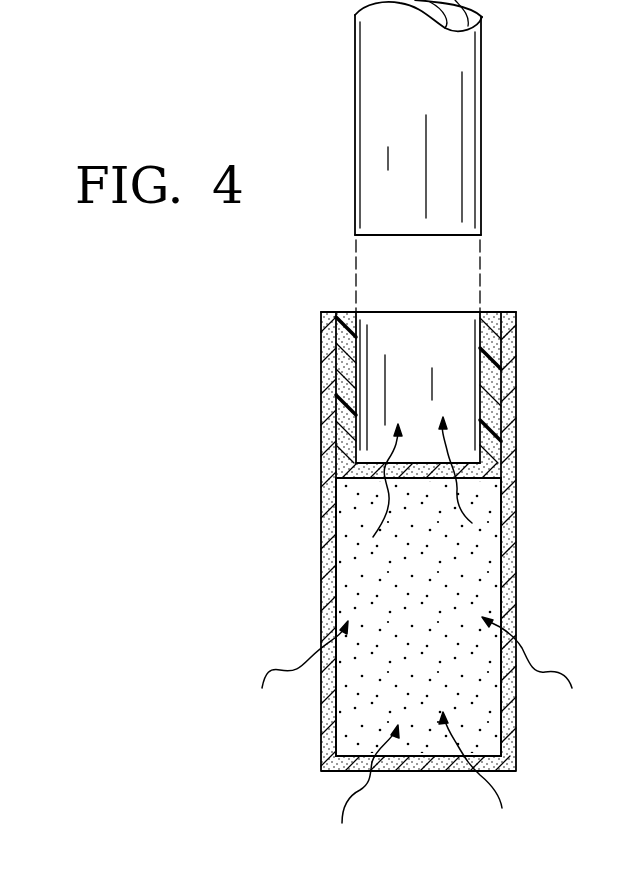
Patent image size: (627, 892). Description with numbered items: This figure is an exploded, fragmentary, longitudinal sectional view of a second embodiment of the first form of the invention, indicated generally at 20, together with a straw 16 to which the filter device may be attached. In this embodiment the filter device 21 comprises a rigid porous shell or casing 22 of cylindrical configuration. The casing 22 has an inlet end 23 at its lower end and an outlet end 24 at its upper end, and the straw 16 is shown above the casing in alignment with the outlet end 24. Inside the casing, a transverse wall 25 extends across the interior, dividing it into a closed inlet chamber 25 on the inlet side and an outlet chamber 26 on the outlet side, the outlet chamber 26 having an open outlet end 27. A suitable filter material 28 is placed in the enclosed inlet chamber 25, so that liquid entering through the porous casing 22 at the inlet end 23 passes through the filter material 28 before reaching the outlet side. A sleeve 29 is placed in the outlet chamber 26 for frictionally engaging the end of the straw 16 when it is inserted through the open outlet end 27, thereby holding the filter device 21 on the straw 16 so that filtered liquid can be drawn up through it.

The straw 16 is at (481, 113).
The second embodiment of the first form of the invention 20 is at (302, 303).
The filter device 21 is at (517, 420).
The rigid porous shell or casing 22 is at (516, 499).
The inlet end 23 is at (501, 772).
The outlet end 24 is at (505, 313).
The transverse wall / closed inlet chamber 25 is at (363, 482).
The outlet chamber 26 is at (336, 382).
The open outlet end 27 is at (338, 342).
The filter material 28 is at (368, 583).
The sleeve 29 is at (505, 358).